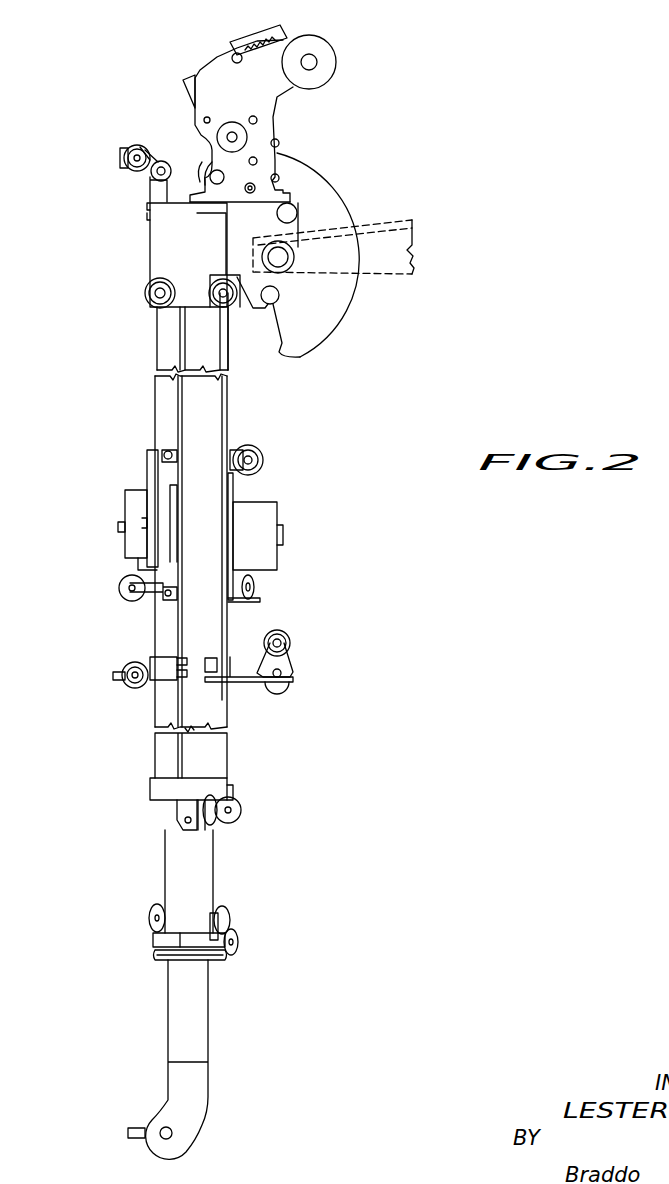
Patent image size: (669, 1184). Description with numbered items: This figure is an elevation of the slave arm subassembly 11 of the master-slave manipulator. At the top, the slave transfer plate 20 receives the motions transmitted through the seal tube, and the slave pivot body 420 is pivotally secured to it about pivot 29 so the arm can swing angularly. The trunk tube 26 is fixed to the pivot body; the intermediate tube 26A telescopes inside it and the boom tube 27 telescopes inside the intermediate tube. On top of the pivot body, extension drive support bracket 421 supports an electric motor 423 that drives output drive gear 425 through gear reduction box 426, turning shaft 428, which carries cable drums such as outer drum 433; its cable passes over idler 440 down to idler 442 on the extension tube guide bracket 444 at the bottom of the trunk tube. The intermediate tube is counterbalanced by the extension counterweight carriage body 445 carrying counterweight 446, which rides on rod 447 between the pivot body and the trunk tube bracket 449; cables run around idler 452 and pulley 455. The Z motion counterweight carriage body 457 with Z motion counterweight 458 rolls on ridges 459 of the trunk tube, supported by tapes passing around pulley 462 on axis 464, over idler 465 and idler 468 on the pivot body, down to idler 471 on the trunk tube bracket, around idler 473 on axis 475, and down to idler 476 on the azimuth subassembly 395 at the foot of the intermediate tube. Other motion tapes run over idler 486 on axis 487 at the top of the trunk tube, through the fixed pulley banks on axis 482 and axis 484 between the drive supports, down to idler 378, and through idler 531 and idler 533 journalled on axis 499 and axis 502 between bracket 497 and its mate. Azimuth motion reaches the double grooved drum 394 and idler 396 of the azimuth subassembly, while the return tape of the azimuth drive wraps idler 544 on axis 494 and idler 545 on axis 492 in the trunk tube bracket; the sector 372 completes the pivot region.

The column 11 is at (153, 703).
The slave transfer plate 20 is at (393, 224).
The trunk tube 26 is at (163, 752).
The intermediate tube 26A is at (165, 857).
The boom tube 27 is at (168, 1020).
The pivot 29 is at (280, 259).
The sector plate 372 is at (367, 285).
The idler 378 is at (227, 918).
The double grooved horizontally disposed drum 394 is at (223, 960).
The azimuth subassembly 395 is at (153, 940).
The idler 396 is at (236, 942).
The slave pivot body 420 is at (152, 243).
The extension drive support bracket 421 is at (272, 97).
The electric motor 423 is at (197, 73).
The output drive gear 425 is at (278, 25).
The gear reduction box 426 is at (255, 32).
The shaft 428 is at (318, 62).
The outer drum 433 is at (325, 47).
The idler 440 is at (243, 132).
The idler 442 is at (212, 822).
The extension tube guide bracket 444 is at (157, 790).
The extension counterweight carriage body 445 is at (232, 495).
The counterweight 446 is at (270, 517).
The rod 447 is at (225, 413).
The trunk tube bracket 449 is at (167, 660).
The idler 452 is at (240, 810).
The pulley 455 is at (253, 598).
The Z motion counterweight carriage body 457 is at (148, 465).
The Z motion counterweight 458 is at (125, 500).
The ridges 459 is at (182, 392).
The pulley 462 is at (260, 458).
The axis 464 is at (258, 448).
The idler 465 is at (232, 290).
The idler 468 is at (147, 292).
The idler 471 is at (125, 665).
The idler 473 is at (133, 583).
The axis 475 is at (129, 588).
The idler 476 is at (150, 917).
The axis 482 is at (257, 161).
The axis 484 is at (257, 120).
The idler 486 is at (190, 173).
The axis 487 is at (215, 173).
The axis 492 is at (283, 648).
The axis 494 is at (287, 672).
The bracket 497 is at (143, 163).
The axis 499 is at (122, 158).
The axis 502 is at (158, 175).
The idler 531 is at (127, 147).
The idler 533 is at (160, 175).
The idler 544 is at (283, 685).
The idler 545 is at (280, 635).